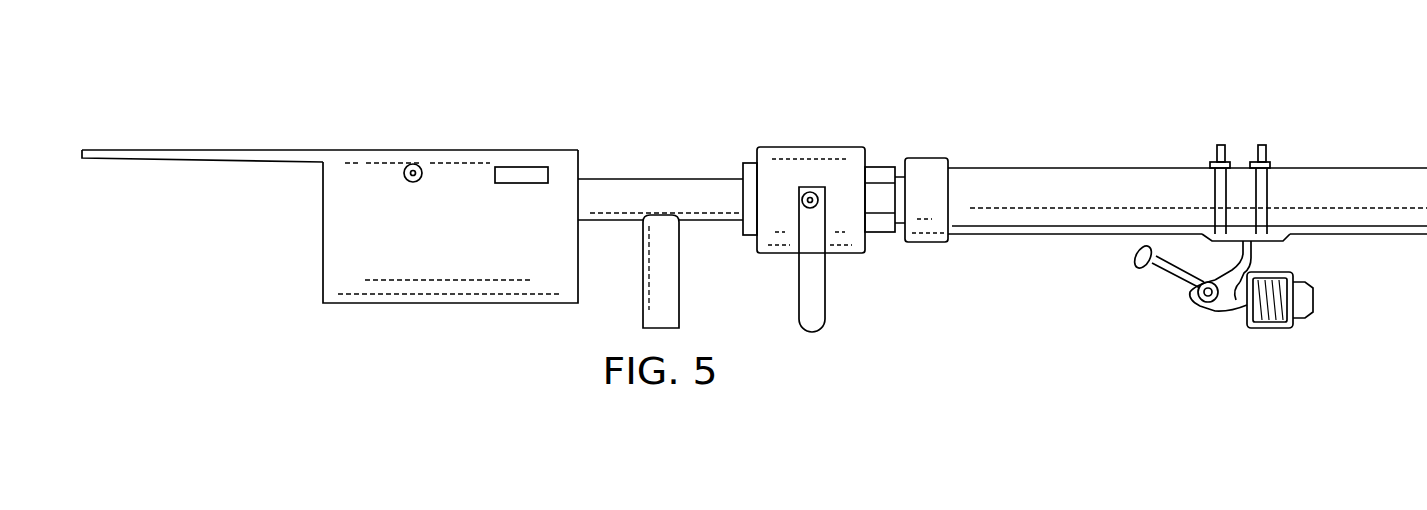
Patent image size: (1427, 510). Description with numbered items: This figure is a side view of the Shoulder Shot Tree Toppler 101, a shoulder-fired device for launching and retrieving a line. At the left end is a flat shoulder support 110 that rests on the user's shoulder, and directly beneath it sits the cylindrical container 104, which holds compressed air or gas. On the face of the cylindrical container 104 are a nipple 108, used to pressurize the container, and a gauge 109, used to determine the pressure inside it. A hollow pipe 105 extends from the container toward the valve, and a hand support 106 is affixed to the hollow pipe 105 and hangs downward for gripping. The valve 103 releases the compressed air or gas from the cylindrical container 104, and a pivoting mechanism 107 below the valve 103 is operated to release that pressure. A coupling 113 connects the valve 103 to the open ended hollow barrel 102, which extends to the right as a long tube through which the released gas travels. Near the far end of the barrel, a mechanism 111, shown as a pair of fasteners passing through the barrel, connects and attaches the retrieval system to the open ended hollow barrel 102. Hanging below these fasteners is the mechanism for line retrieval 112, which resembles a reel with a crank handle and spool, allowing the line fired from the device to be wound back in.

The Shoulder Shot Tree Toppler 101 is at (698, 83).
The open ended hollow barrel 102 is at (1077, 167).
The valve 103 is at (810, 146).
The cylindrical container 104 is at (390, 305).
The hollow pipe 105 is at (660, 178).
The hand support 106 is at (680, 292).
The mechanism to release the pressure 107 is at (826, 293).
The nipple 108 is at (410, 183).
The gauge 109 is at (520, 185).
The shoulder support 110 is at (193, 148).
The mechanism to connect and attach the retrieval system 111 is at (1268, 152).
The mechanism for line retrieval 112 is at (1222, 310).
The coupling 113 is at (928, 157).